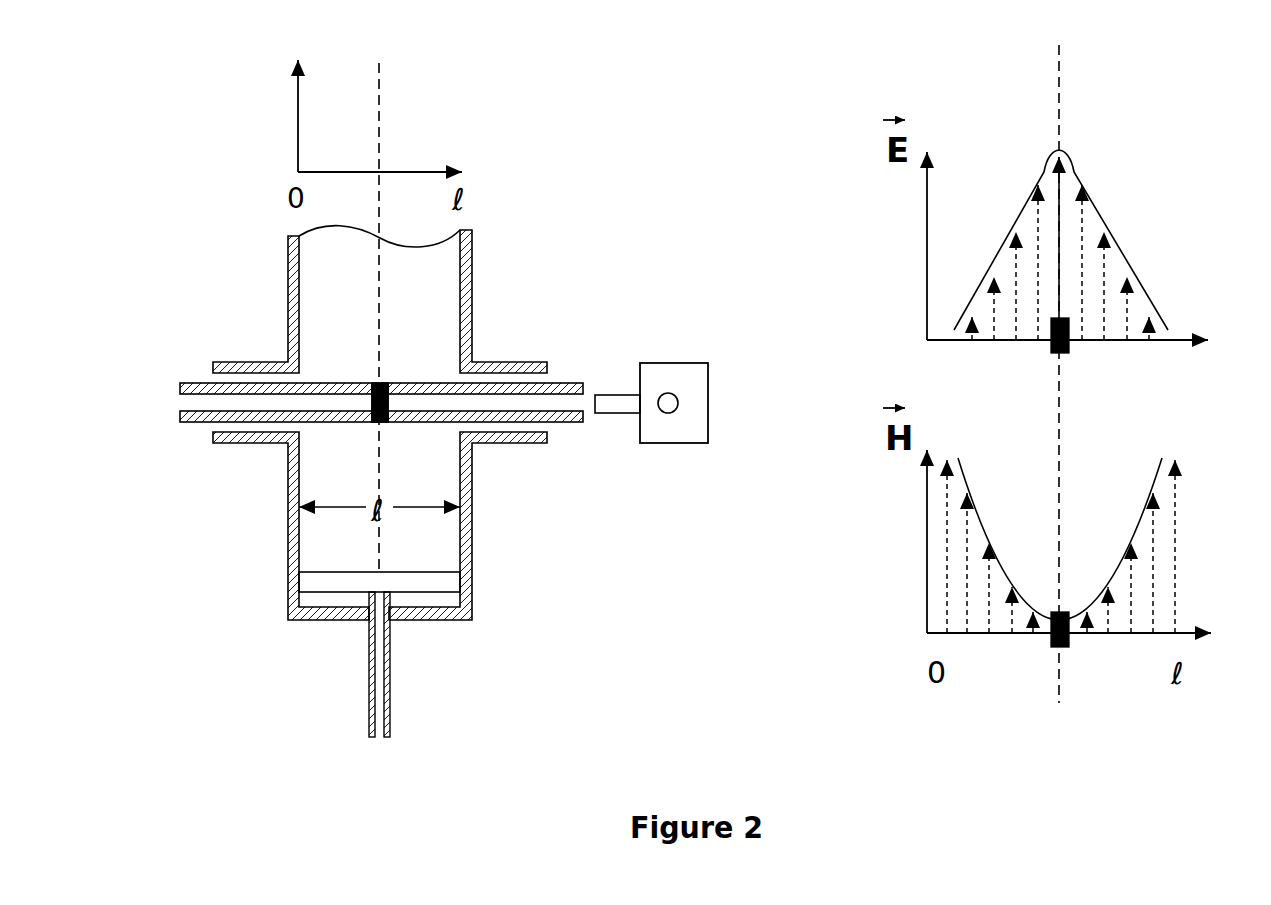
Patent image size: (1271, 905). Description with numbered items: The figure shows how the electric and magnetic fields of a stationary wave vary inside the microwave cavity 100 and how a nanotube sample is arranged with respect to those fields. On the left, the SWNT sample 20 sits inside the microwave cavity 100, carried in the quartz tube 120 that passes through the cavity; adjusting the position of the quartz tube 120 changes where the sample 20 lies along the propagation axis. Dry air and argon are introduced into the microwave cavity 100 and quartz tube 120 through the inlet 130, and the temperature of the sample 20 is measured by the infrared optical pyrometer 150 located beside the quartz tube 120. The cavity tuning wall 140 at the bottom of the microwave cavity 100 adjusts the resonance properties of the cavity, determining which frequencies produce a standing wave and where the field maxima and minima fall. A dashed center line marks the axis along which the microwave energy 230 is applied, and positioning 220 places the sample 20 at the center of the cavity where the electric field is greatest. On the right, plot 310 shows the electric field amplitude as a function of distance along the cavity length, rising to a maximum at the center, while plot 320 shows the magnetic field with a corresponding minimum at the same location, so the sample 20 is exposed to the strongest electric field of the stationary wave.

The SWNT sample 20 is at (371, 384).
The microwave cavity 100 is at (285, 540).
The quartz tube 120 is at (426, 424).
The inlet 130 is at (176, 412).
The cavity tuning wall 140 is at (393, 648).
The infrared optical pyrometer 150 is at (648, 361).
The positioning 220 is at (371, 424).
The microwave energy 230 is at (388, 118).
The electric field plot 310 is at (1015, 251).
The magnetic field plot 320 is at (1023, 552).